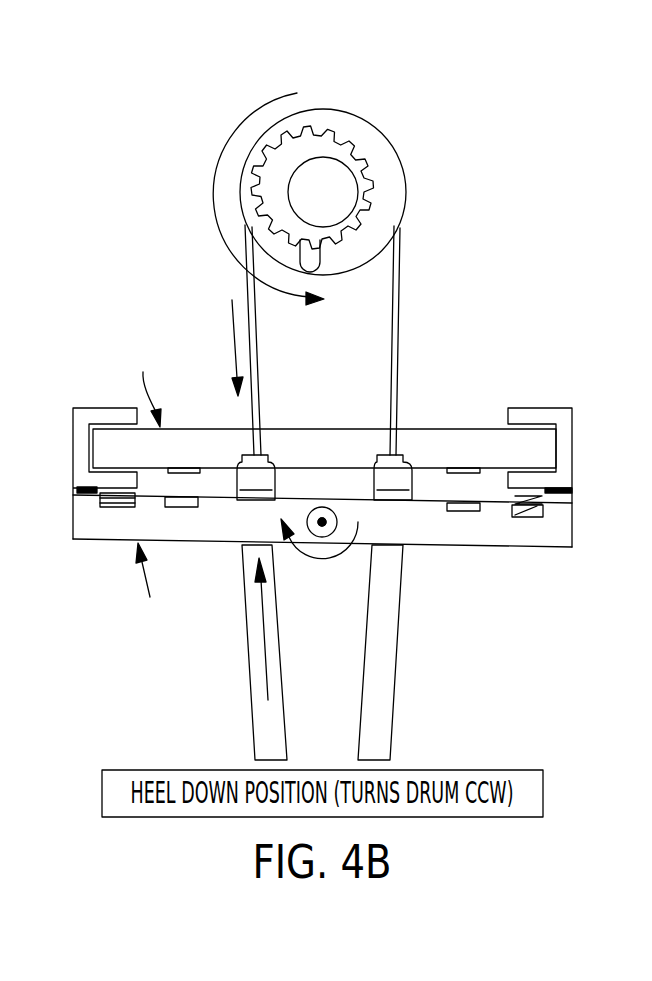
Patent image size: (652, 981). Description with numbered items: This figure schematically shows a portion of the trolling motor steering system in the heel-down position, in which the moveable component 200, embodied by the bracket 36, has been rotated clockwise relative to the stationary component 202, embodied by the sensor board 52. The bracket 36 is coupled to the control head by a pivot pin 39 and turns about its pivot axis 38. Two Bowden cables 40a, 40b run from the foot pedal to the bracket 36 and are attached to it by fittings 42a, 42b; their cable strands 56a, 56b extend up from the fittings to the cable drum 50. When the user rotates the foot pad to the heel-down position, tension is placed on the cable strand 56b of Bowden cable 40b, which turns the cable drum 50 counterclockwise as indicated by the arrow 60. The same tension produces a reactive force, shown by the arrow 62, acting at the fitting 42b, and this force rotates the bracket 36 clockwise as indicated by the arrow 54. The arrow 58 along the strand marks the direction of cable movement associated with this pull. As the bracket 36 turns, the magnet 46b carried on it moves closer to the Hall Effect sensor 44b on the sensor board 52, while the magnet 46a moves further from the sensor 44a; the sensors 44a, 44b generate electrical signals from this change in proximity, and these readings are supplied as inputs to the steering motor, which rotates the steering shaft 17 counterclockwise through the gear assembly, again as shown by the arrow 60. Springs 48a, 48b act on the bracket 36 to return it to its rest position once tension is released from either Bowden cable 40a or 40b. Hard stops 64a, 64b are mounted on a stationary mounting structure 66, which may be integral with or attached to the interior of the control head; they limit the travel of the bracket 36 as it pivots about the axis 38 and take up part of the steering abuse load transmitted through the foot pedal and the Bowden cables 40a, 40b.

The steering shaft 17 is at (328, 157).
The bracket 36 is at (518, 532).
The pivot axis 38 is at (325, 525).
The pivot pin 39 is at (316, 510).
The Bowden cable 40a is at (385, 672).
The Bowden cable 40b is at (260, 683).
The fitting 42a is at (382, 457).
The fitting 42b is at (262, 453).
The sensor 44a is at (465, 473).
The sensor 44b is at (176, 474).
The magnet 46a is at (465, 511).
The magnet 46b is at (181, 508).
The spring 48a is at (536, 515).
The spring 48b is at (118, 508).
The cable drum 50 is at (328, 132).
The sensor board 52 is at (430, 428).
The arrow 54 is at (323, 562).
The cable strand 56a is at (397, 335).
The cable strand 56b is at (258, 343).
The strap motion arrow 58 is at (232, 353).
The arrow 60 is at (250, 117).
The arrow 62 is at (263, 638).
The hard stop 64a is at (562, 492).
The hard stop 64b is at (76, 488).
The stationary mounting structure 66 is at (85, 418).
The moveable component 200 is at (150, 586).
The stationary component 202 is at (145, 383).